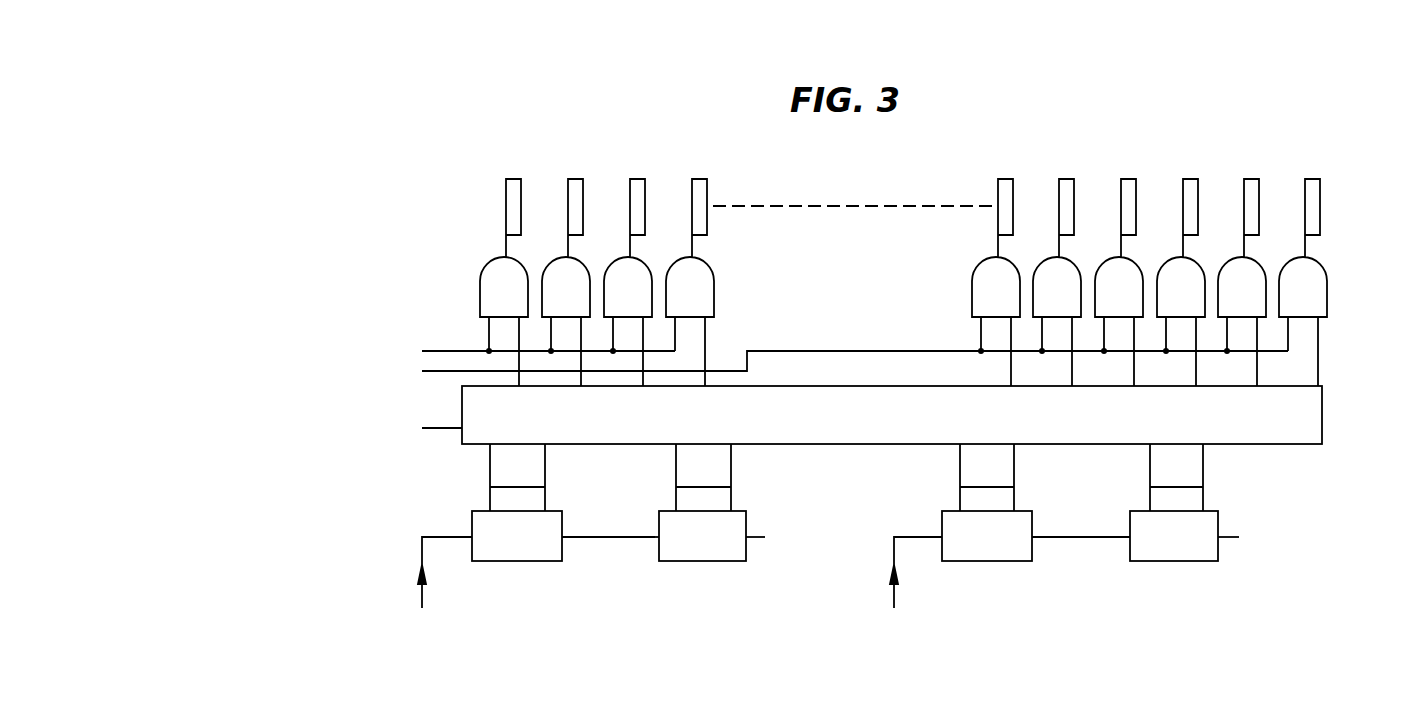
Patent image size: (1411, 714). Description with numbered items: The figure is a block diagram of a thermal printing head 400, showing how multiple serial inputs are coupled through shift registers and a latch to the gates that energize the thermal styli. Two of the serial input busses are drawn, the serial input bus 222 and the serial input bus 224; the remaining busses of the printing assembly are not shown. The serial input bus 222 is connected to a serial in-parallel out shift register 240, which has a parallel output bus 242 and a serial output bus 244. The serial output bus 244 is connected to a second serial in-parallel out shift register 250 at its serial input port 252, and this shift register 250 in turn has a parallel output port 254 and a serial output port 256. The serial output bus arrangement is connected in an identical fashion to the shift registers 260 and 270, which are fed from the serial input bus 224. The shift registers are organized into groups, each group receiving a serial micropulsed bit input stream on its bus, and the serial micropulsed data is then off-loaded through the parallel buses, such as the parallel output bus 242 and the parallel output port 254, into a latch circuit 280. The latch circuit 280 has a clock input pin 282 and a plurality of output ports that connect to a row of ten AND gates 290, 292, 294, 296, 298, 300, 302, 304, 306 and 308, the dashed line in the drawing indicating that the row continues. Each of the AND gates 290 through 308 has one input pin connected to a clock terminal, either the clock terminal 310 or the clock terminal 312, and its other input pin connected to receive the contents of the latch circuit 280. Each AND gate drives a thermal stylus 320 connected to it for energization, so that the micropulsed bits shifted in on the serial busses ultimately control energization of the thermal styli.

The thermal printing head 400 is at (323, 393).
The thermal stylus 320 is at (512, 196).
The AND gate 290 is at (518, 275).
The AND gate 292 is at (580, 275).
The AND gate 294 is at (642, 275).
The AND gate 296 is at (704, 275).
The AND gate 298 is at (1012, 268).
The AND gate 300 is at (1074, 268).
The AND gate 302 is at (1135, 268).
The AND gate 304 is at (1197, 268).
The AND gate 306 is at (1258, 268).
The AND gate 308 is at (1320, 268).
The clock terminal 310 is at (428, 351).
The clock terminal 312 is at (428, 371).
The clock input pin 282 is at (436, 428).
The latch circuit 280 is at (1322, 424).
The parallel output bus 242 is at (545, 488).
The parallel output port 254 is at (731, 488).
The serial output bus 244 is at (603, 537).
The serial input port 252 is at (655, 540).
The serial output port 256 is at (765, 537).
The serial in-parallel out shift register 240 is at (492, 562).
The serial in-parallel out shift register 250 is at (682, 555).
The shift register 260 is at (963, 554).
The shift register 270 is at (1152, 554).
The serial input bus 222 is at (419, 568).
The serial input bus 224 is at (892, 568).